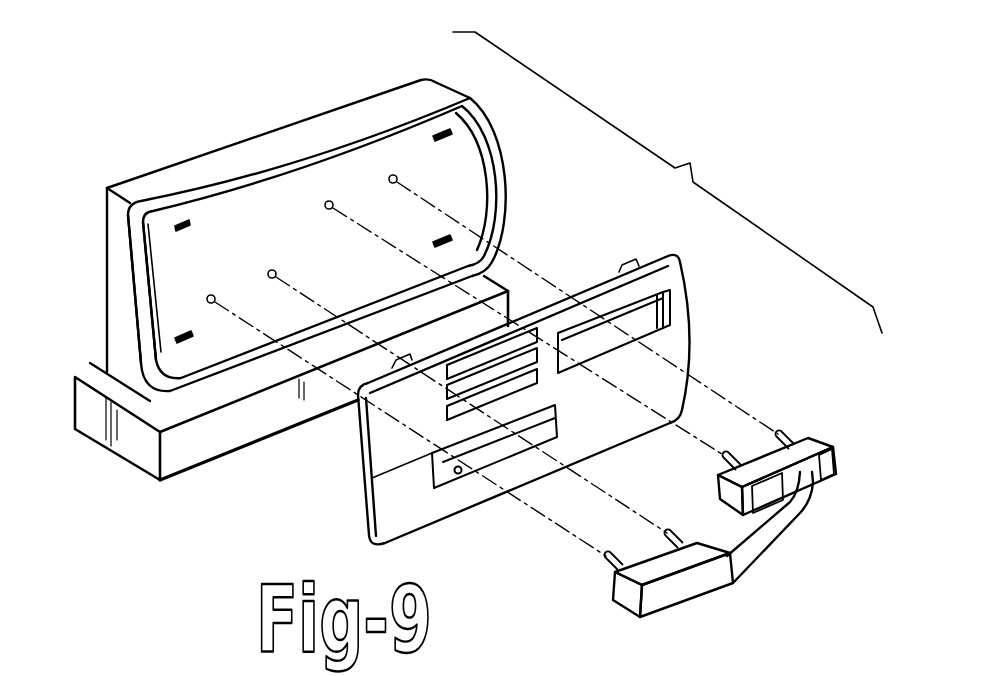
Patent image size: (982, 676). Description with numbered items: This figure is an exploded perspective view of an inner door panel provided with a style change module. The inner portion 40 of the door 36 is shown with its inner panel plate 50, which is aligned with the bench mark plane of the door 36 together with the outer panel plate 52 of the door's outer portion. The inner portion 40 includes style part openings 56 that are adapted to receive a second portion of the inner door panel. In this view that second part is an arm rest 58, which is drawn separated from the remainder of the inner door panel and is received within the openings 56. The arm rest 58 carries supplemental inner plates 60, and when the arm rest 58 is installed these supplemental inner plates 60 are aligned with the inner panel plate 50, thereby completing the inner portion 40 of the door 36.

The door 36 is at (122, 246).
The outer panel plate 52 is at (178, 303).
The inner portion of the door 40 is at (660, 388).
The inner panel plate 50 is at (358, 455).
The style part openings 56 is at (640, 318).
The arm rest 58 is at (777, 525).
The supplemental inner plates 60 is at (802, 440).